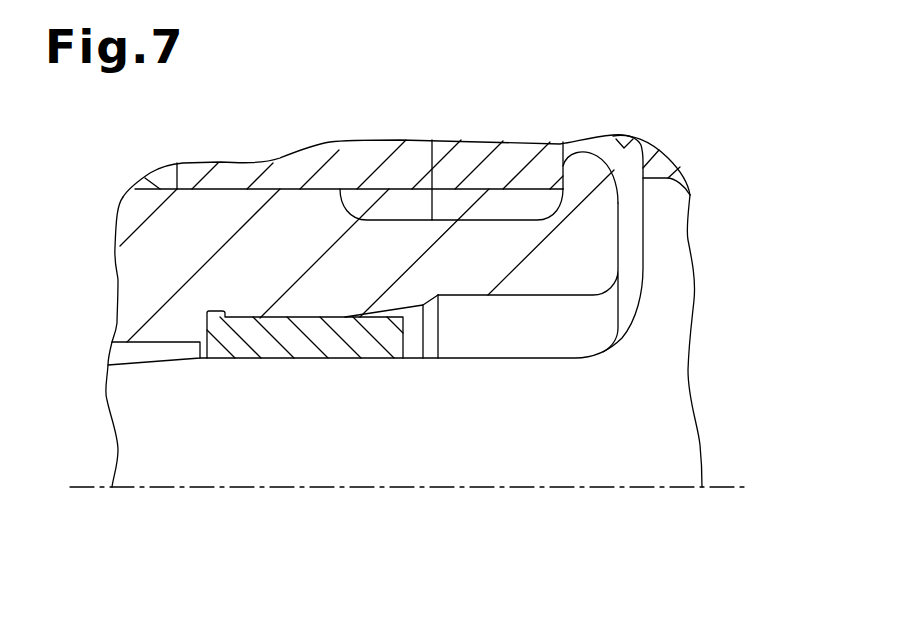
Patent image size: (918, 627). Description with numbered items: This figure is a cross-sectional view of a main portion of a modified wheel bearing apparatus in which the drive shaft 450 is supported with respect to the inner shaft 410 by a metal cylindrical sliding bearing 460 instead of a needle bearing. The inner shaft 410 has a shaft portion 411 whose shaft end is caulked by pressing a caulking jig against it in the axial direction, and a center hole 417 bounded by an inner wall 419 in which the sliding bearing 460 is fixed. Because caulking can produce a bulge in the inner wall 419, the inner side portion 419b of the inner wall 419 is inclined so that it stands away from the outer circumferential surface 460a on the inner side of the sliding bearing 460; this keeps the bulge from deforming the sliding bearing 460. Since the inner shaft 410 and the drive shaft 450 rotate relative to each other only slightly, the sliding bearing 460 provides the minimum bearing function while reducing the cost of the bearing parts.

The inner shaft 410 is at (101, 278).
The shaft portion 411 is at (127, 217).
The center hole 417 is at (562, 296).
The inner wall 419 is at (282, 319).
The inner side portion of inner wall 419b is at (412, 312).
The drive shaft 450 is at (685, 311).
The sliding bearing 460 is at (336, 352).
The outer circumferential surface in the inner side of the sliding bearing 460a is at (372, 315).